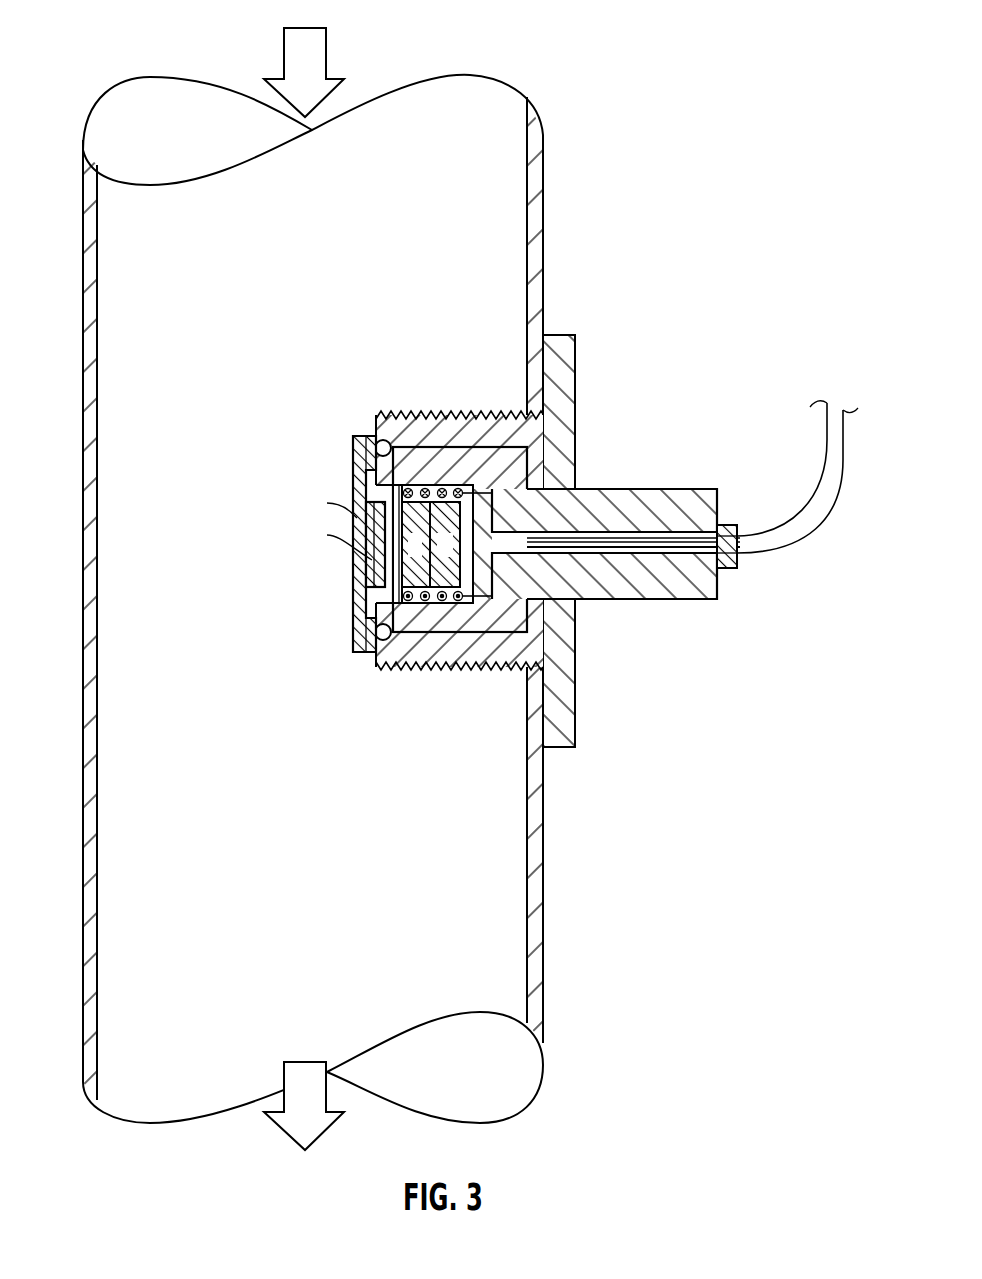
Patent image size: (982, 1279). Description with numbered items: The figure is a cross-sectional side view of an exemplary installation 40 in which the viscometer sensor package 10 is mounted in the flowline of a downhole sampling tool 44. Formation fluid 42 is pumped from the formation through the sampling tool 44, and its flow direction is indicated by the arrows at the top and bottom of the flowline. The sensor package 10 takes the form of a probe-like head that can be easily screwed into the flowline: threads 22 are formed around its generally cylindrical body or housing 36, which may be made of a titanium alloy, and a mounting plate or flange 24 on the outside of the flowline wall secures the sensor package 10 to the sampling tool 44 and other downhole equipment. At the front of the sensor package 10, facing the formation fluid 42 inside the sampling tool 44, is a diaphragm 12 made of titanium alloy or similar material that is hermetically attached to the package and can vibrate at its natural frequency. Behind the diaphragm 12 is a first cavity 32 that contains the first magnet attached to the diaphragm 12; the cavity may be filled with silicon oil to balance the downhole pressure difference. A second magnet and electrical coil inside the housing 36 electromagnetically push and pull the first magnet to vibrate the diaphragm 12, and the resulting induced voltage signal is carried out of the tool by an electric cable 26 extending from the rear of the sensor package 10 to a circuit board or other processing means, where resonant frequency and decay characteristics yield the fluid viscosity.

The viscometer sensor package 10 is at (572, 544).
The diaphragm 12 is at (356, 600).
The threads 22 is at (459, 582).
The mounting plate or flange 24 is at (577, 452).
The electric cable 26 is at (826, 446).
The first cavity 32 is at (370, 590).
The cylindrical body or housing 36 is at (422, 684).
The installation 40 is at (608, 90).
The formation fluid 42 is at (320, 52).
The sampling tool 44 is at (335, 276).